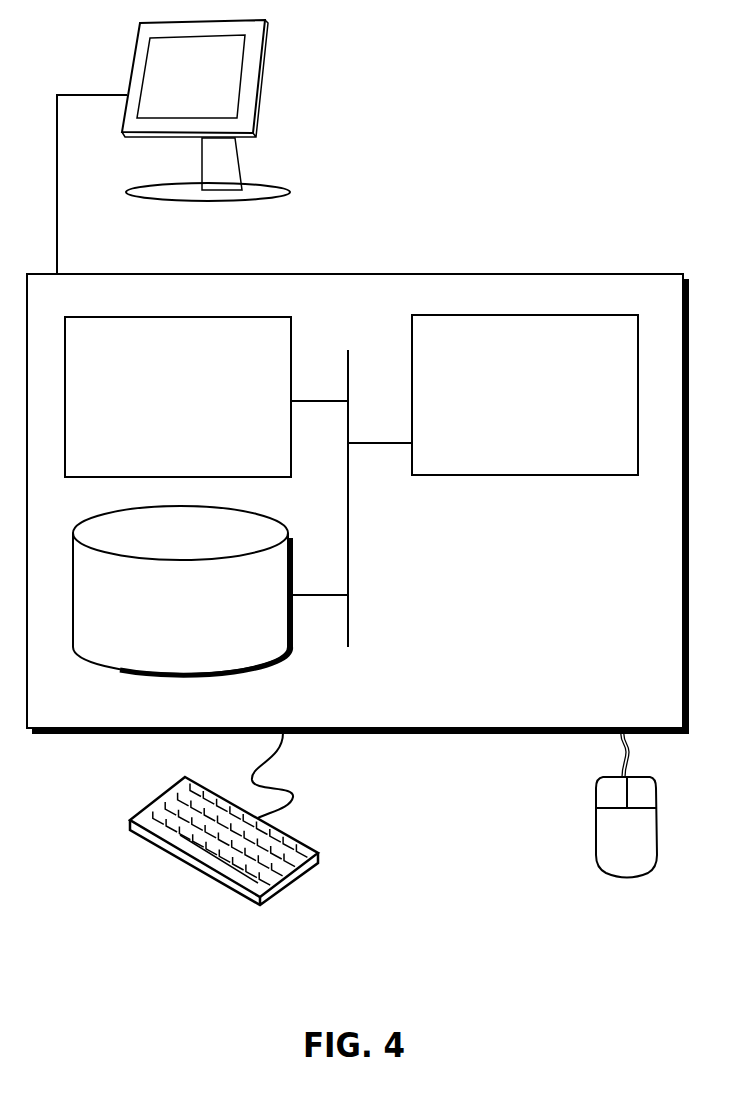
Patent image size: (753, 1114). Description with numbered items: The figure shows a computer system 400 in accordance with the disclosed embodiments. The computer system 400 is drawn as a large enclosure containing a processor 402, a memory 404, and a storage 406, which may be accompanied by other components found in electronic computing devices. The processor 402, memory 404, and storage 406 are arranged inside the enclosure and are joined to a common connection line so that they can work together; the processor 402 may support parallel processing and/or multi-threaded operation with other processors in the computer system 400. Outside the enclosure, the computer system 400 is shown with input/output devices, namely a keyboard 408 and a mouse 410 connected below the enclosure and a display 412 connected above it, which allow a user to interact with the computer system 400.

The computer system 400 is at (400, 253).
The processor 402 is at (507, 408).
The memory 404 is at (200, 407).
The storage 406 is at (164, 618).
The keyboard 408 is at (148, 842).
The mouse 410 is at (605, 851).
The display 412 is at (173, 147).